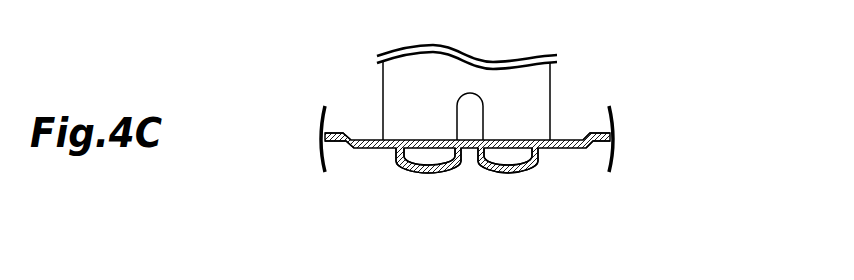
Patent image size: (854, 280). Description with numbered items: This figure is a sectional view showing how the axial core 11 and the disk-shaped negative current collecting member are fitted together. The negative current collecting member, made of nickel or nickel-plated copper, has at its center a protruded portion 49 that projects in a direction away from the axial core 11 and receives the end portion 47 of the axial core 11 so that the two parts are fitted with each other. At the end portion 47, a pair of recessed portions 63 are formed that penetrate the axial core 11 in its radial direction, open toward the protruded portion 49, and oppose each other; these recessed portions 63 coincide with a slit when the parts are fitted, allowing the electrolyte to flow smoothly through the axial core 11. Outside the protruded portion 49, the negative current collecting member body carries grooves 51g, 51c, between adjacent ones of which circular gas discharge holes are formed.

The axial core 11 is at (540, 80).
The recessed portion 63 is at (471, 108).
The groove 51g is at (335, 150).
The groove 51c is at (603, 150).
The protruded portion 49 is at (407, 163).
The end portion 47 is at (503, 148).